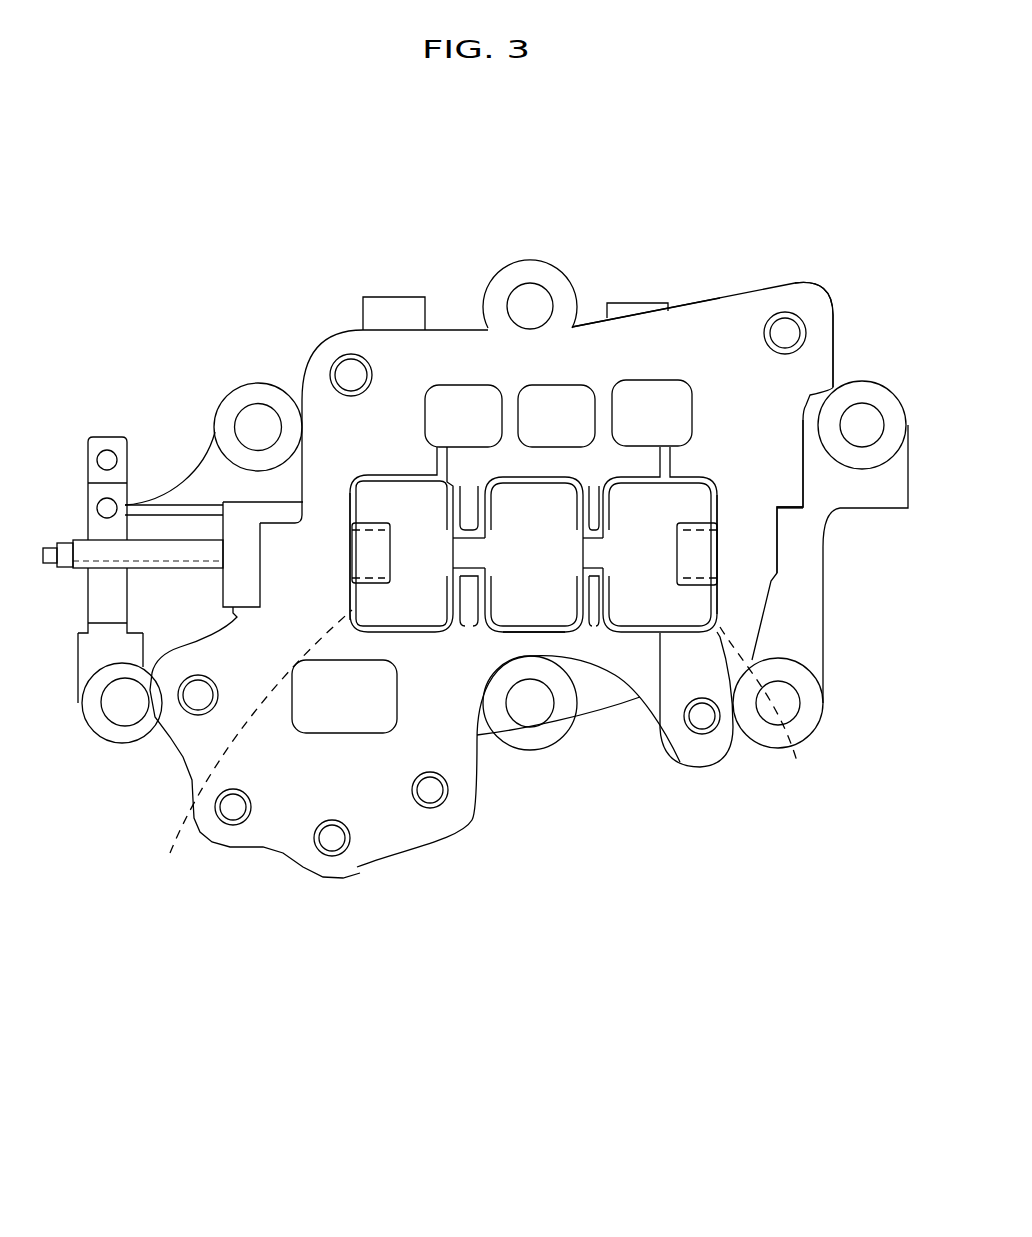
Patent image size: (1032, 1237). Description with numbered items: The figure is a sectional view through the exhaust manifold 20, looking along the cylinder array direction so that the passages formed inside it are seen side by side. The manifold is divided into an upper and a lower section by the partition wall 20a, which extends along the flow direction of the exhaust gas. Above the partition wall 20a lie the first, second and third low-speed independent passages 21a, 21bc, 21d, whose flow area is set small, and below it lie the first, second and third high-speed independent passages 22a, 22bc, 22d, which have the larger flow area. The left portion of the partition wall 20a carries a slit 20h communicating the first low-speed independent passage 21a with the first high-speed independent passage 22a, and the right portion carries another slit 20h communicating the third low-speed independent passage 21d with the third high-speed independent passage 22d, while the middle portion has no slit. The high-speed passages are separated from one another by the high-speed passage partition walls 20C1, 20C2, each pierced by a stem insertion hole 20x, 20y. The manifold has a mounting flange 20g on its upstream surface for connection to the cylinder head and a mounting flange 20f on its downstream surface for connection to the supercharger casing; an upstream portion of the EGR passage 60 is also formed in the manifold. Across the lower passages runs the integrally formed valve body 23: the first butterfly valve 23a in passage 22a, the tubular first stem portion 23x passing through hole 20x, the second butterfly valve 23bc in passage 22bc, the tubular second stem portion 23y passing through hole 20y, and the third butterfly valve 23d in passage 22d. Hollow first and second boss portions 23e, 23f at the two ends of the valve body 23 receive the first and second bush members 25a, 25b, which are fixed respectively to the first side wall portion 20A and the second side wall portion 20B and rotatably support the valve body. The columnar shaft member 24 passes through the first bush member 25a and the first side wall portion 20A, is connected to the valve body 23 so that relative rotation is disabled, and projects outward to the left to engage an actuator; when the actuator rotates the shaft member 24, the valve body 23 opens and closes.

The exhaust manifold 20 is at (345, 265).
The partition wall 20a is at (570, 465).
The mounting flange 20f is at (725, 318).
The mounting flange 20g is at (122, 735).
The slit 20h is at (437, 473).
The first side wall portion 20A is at (333, 567).
The second side wall portion 20B is at (770, 568).
The stem insertion hole 20x is at (466, 520).
The stem insertion hole 20y is at (592, 507).
The high-speed passage partition wall 20C1 is at (468, 570).
The high-speed passage partition wall 20C2 is at (597, 575).
The first low-speed independent passage 21a is at (485, 430).
The second low-speed independent passage 21bc is at (587, 430).
The third low-speed independent passage 21d is at (675, 431).
The first high-speed independent passage 22a is at (417, 633).
The second high-speed independent passage 22bc is at (573, 600).
The third high-speed independent passage 22d is at (612, 632).
The valve body 23 is at (383, 477).
The first butterfly valve 23a is at (412, 605).
The second butterfly valve 23bc is at (527, 603).
The third butterfly valve 23d is at (683, 605).
The first boss portion 23e is at (380, 554).
The second boss portion 23f is at (677, 555).
The first stem portion 23x is at (468, 553).
The second stem portion 23y is at (588, 600).
The shaft member 24 is at (162, 548).
The first bush member 25a is at (237, 746).
The second bush member 25b is at (787, 711).
The EGR passage 60 is at (352, 710).